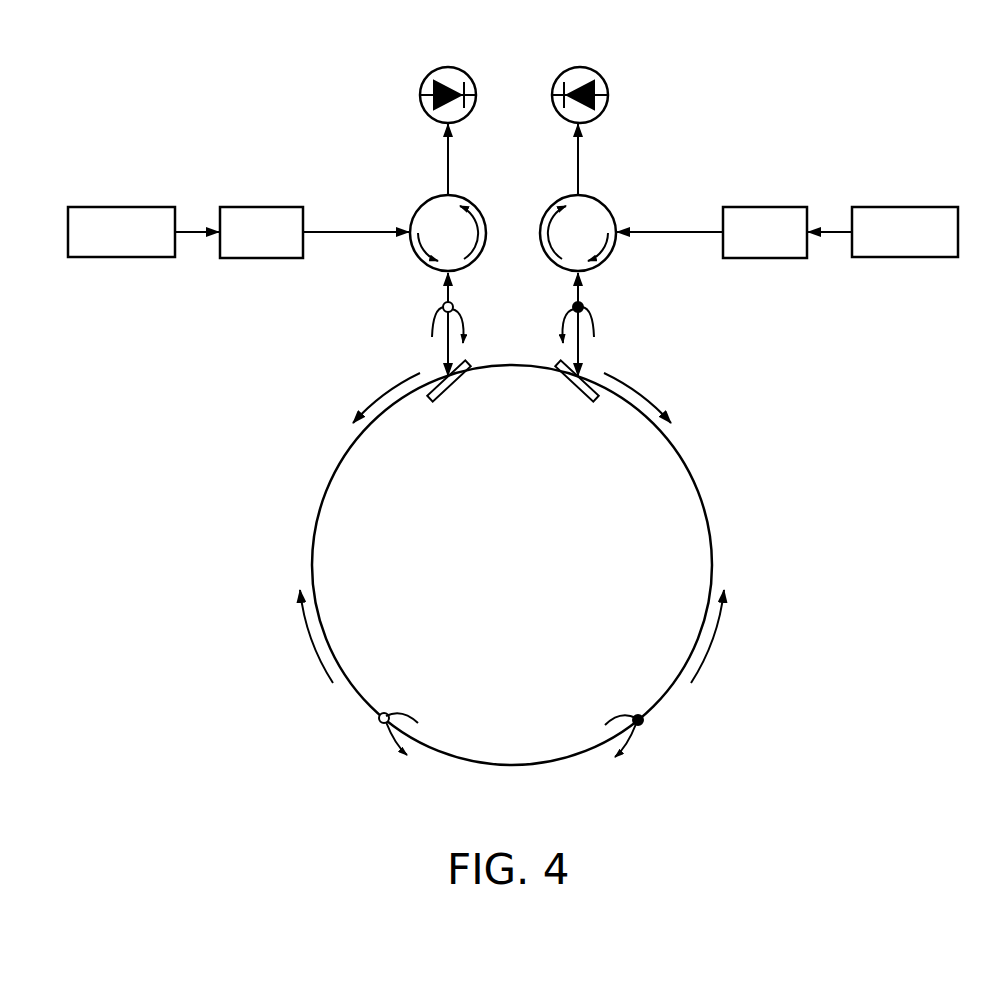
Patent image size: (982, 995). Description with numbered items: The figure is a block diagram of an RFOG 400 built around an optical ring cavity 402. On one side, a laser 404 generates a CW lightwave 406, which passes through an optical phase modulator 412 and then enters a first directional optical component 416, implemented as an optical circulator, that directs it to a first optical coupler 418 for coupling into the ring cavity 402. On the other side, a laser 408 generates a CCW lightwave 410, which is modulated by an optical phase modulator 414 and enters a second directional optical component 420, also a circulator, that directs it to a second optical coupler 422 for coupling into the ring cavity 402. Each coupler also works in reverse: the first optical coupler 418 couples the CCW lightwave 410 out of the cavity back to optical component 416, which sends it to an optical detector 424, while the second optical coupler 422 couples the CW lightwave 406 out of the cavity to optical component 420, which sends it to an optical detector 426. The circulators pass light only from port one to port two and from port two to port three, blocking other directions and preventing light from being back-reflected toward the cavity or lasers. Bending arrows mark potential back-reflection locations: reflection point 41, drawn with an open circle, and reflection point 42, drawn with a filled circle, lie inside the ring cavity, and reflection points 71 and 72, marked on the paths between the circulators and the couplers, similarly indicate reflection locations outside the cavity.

The RFOG 400 is at (731, 136).
The optical ring cavity 402 is at (697, 482).
The laser 404 is at (890, 258).
The CW lightwave 406 is at (836, 234).
The laser 408 is at (140, 258).
The CCW lightwave 410 is at (194, 234).
The optical phase modulator 412 is at (745, 258).
The optical phase modulator 414 is at (285, 258).
The first directional optical component 416 is at (617, 222).
The first optical coupler 418 is at (582, 394).
The second directional optical component 420 is at (410, 222).
The second optical coupler 422 is at (444, 394).
The optical detector 424 is at (605, 86).
The optical detector 426 is at (422, 86).
The CCW reflection point 71 is at (445, 303).
The CW reflection point 72 is at (581, 303).
The reflection point 41 is at (382, 718).
The reflection point 42 is at (640, 718).